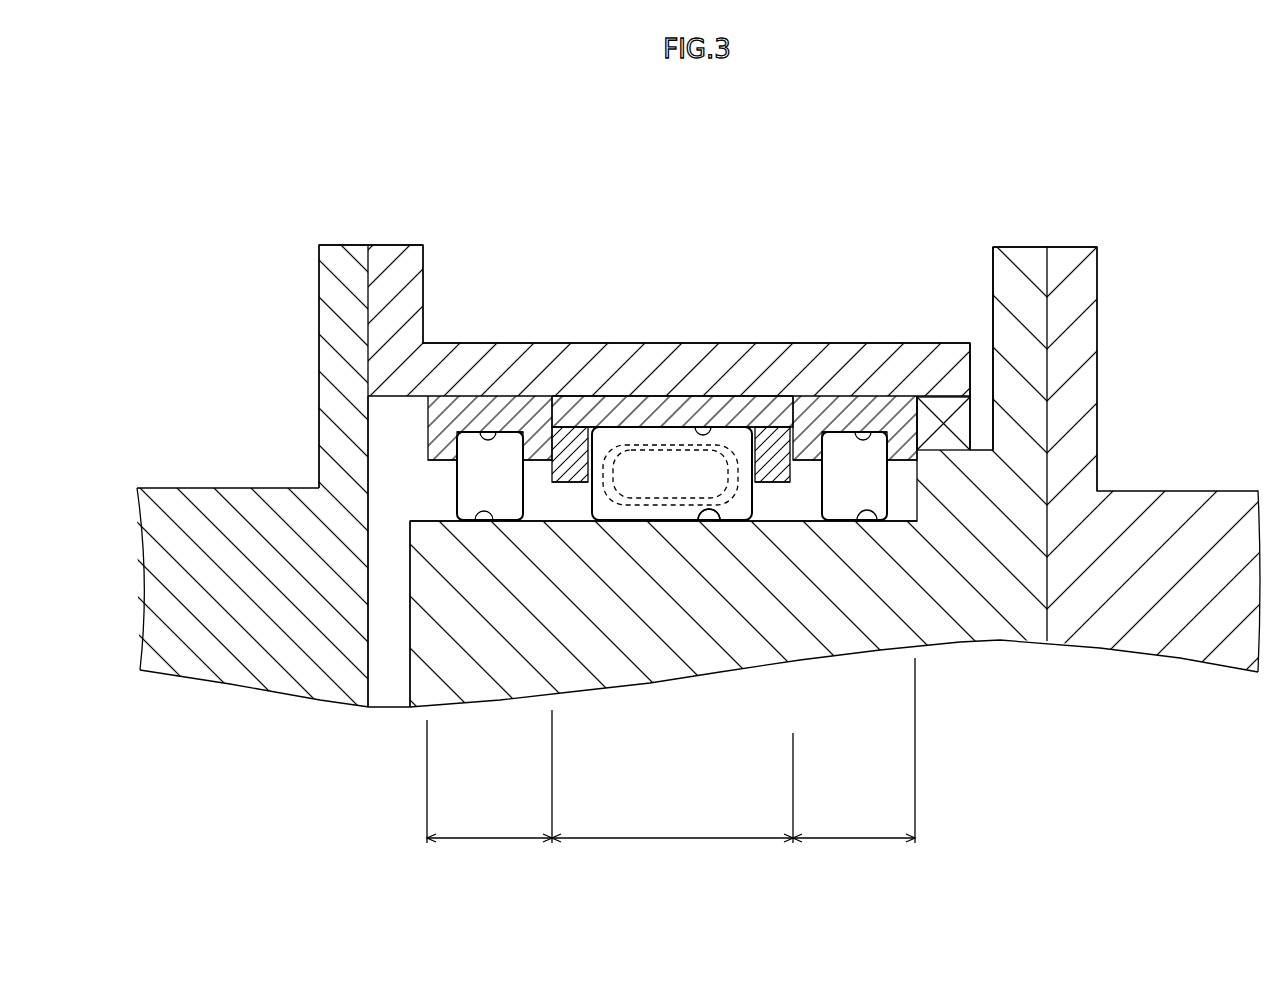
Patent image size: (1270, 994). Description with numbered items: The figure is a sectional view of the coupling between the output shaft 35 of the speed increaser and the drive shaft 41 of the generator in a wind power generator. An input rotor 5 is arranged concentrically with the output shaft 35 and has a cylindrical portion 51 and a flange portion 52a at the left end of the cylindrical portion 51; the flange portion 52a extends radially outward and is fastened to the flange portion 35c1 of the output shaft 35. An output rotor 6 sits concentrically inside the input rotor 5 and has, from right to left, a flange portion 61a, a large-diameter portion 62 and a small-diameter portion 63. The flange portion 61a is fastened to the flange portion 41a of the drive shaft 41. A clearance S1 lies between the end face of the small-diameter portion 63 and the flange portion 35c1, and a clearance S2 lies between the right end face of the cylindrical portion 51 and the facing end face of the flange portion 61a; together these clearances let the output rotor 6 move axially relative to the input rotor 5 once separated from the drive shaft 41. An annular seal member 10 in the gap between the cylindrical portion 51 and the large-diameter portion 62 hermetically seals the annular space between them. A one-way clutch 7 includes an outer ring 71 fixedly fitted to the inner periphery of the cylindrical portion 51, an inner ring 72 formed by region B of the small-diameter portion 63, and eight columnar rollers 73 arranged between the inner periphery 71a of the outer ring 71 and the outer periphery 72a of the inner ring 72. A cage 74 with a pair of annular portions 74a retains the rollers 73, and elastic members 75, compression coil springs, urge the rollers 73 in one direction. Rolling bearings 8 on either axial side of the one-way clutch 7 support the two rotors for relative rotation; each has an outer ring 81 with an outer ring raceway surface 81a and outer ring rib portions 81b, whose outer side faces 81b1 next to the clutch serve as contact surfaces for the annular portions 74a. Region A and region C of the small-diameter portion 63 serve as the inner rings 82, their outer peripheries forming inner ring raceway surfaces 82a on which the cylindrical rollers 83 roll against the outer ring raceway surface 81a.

The output shaft 35 is at (228, 486).
The flange portion 35c1 is at (330, 243).
The input rotor 5 is at (538, 340).
The cylindrical portion 51 is at (620, 340).
The flange portion 52a is at (395, 243).
The rolling bearing 8 is at (606, 575).
The outer ring 81 is at (505, 412).
The outer ring raceway surface 81a is at (478, 430).
The outer ring rib portion 81b is at (444, 450).
The outer side face 81b1 is at (577, 426).
The one-way clutch 7 is at (681, 392).
The outer ring 71 is at (653, 396).
The inner periphery 71a is at (712, 428).
The inner ring 72 is at (669, 842).
The outer periphery 72a is at (700, 514).
The roller 73 is at (633, 514).
The cage 74 is at (772, 484).
The annular portion 74a is at (582, 484).
The elastic member 75 is at (667, 506).
The inner ring 82 is at (492, 842).
The inner ring raceway surface 82a is at (492, 510).
The cylindrical roller 83 is at (510, 502).
The output rotor 6 is at (995, 644).
The flange portion 61a is at (1020, 245).
The large-diameter portion 62 is at (980, 447).
The small-diameter portion 63 is at (409, 519).
The seal member 10 is at (942, 450).
The drive shaft 41 is at (1195, 488).
The flange portion 41a is at (1070, 245).
The clearance S1 is at (383, 655).
The clearance S2 is at (985, 357).
The region A is at (854, 750).
The region B is at (672, 776).
The region C is at (489, 781).